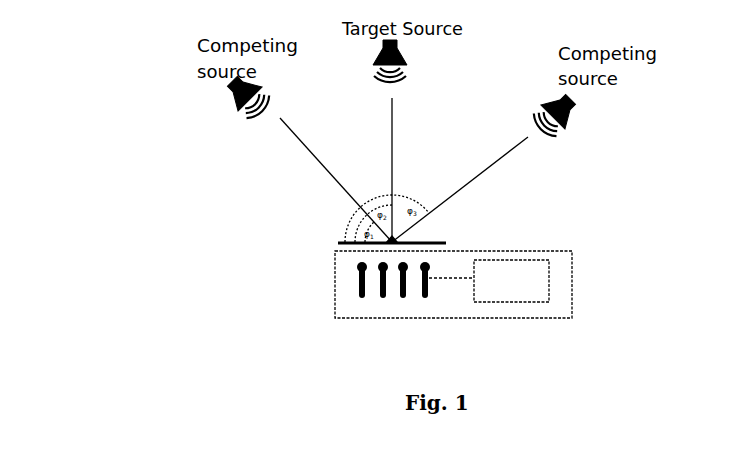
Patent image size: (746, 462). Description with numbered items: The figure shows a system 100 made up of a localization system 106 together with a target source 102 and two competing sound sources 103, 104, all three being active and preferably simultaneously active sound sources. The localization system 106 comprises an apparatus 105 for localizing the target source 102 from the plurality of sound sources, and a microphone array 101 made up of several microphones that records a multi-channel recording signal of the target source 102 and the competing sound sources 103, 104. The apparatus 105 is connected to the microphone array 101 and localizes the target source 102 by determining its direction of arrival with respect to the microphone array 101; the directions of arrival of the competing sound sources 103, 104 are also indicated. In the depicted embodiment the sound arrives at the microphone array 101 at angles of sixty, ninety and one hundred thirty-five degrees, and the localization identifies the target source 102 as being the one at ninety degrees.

The system 100 is at (347, 281).
The microphone array 101 is at (355, 278).
The target source 102 is at (405, 57).
The competing sound source 103 is at (237, 113).
The competing sound source 104 is at (572, 107).
The apparatus 105 is at (549, 268).
The localization system 106 is at (572, 298).